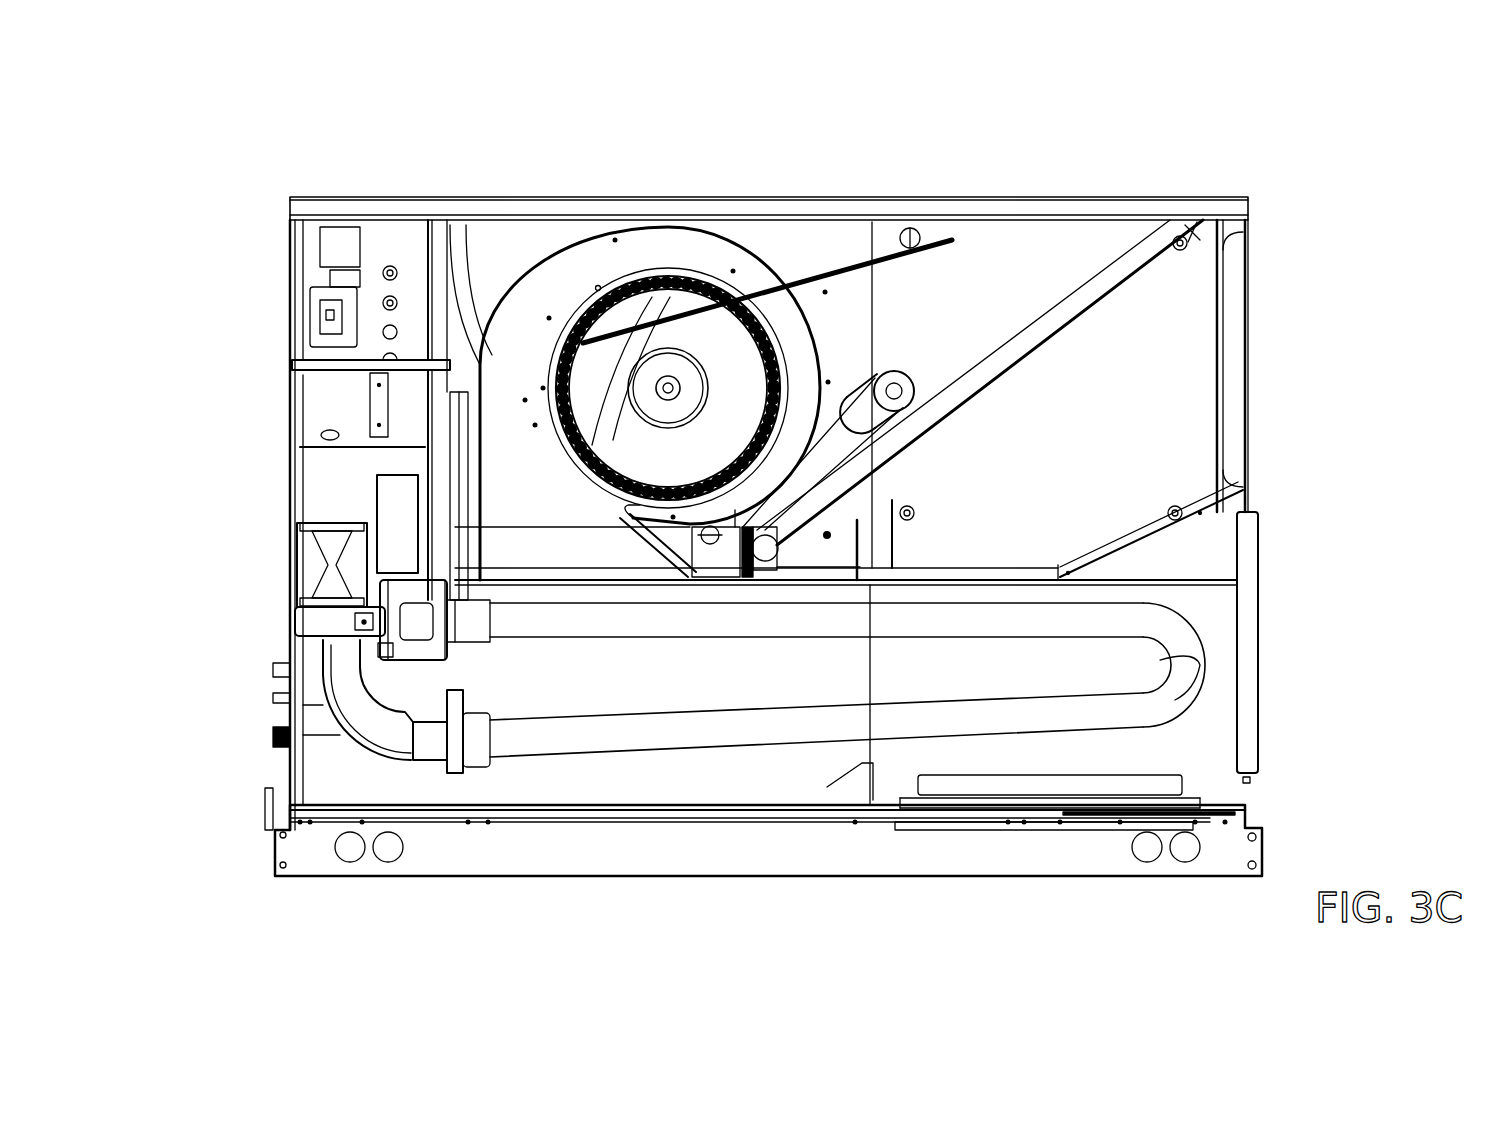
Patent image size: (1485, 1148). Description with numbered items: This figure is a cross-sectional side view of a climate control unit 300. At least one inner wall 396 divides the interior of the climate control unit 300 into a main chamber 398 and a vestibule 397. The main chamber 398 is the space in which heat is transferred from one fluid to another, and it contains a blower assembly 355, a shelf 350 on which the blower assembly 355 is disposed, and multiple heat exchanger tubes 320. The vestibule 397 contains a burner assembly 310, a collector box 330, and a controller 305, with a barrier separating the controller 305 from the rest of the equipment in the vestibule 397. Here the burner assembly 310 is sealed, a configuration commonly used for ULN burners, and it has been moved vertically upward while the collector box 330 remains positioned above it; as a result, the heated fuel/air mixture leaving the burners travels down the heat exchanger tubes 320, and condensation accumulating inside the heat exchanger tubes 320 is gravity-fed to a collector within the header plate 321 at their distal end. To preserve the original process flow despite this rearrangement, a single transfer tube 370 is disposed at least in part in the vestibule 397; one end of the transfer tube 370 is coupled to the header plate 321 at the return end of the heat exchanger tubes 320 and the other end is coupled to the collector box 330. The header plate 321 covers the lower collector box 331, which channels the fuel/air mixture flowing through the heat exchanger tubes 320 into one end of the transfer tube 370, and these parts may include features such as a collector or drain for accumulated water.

The climate control unit 300 is at (229, 148).
The controller 305 is at (287, 265).
The burner assembly 310 is at (287, 628).
The heat exchanger tubes 320 is at (1012, 735).
The header plate 321 is at (433, 760).
The collector box 330 is at (427, 450).
The lower collector box 331 is at (325, 785).
The shelf 350 is at (557, 585).
The blower assembly 355 is at (728, 228).
The transfer tube 370 is at (362, 747).
The inner wall 396 is at (455, 413).
The vestibule 397 is at (323, 468).
The main chamber 398 is at (1026, 250).